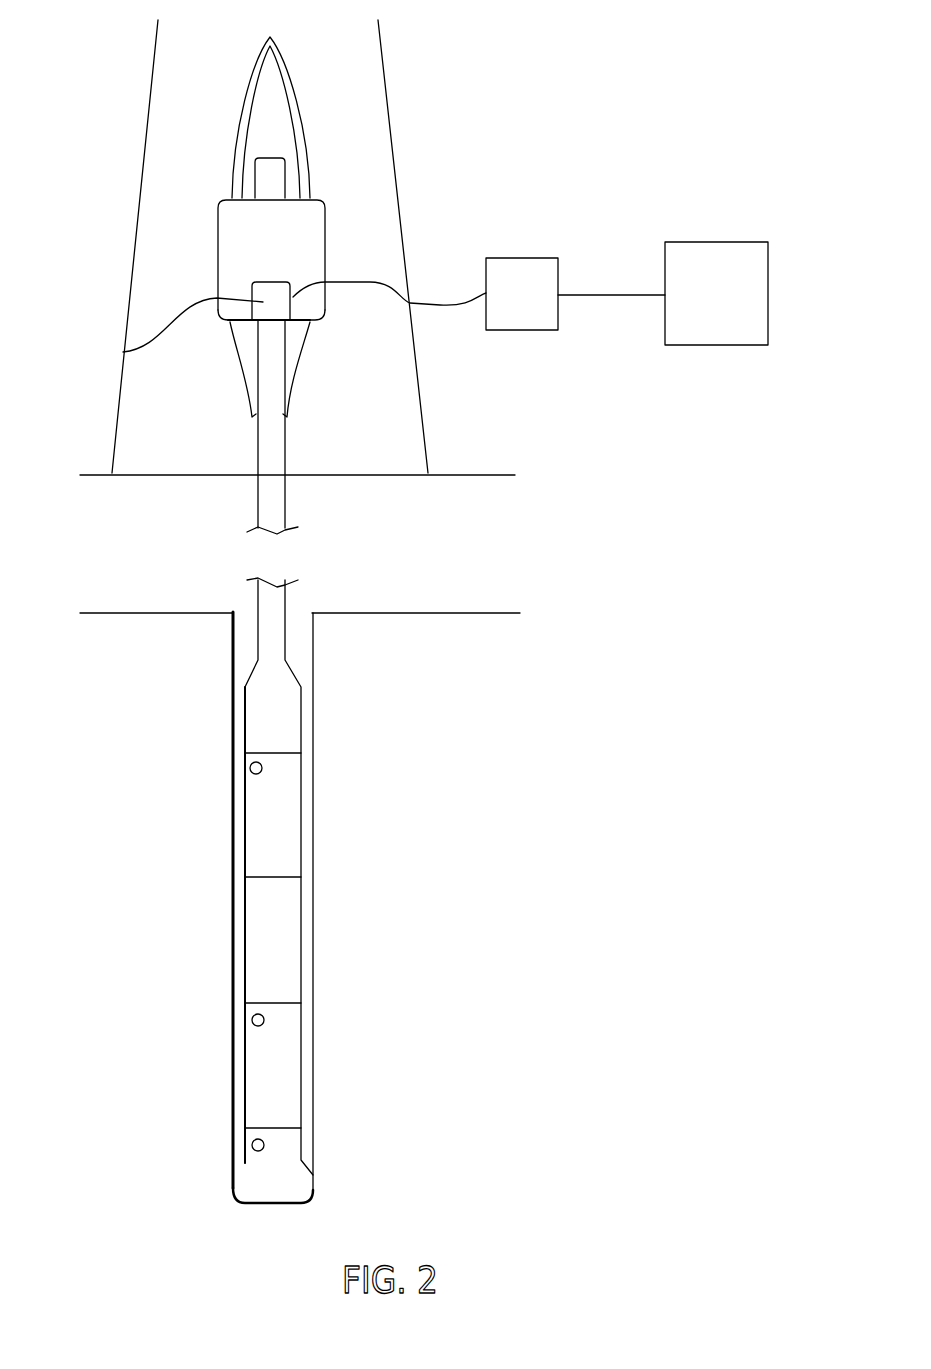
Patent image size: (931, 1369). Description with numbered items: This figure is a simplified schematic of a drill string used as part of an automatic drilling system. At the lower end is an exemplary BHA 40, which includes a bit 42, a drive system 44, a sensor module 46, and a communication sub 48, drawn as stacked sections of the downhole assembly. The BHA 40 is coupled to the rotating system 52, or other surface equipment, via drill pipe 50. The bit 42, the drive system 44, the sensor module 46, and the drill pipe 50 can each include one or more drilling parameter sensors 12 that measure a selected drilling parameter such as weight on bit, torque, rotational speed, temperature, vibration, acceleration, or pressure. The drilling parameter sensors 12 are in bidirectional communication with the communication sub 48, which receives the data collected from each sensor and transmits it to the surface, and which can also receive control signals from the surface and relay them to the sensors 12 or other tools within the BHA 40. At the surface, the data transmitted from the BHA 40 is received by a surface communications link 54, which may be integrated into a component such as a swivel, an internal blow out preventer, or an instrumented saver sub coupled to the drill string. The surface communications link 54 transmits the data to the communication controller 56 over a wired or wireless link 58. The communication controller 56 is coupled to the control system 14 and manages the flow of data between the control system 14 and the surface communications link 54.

The drilling parameter sensor 12 is at (250, 767).
The control system 14 is at (705, 310).
The BHA 40 is at (418, 842).
The bit 42 is at (288, 1175).
The drive system 44 is at (287, 1077).
The sensor module 46 is at (293, 825).
The communication sub 48 is at (290, 703).
The drill pipe 50 is at (265, 612).
The rotating system 52 is at (313, 243).
The surface communications link 54 is at (123, 352).
The communication controller 56 is at (510, 308).
The wired or wireless link 58 is at (447, 307).